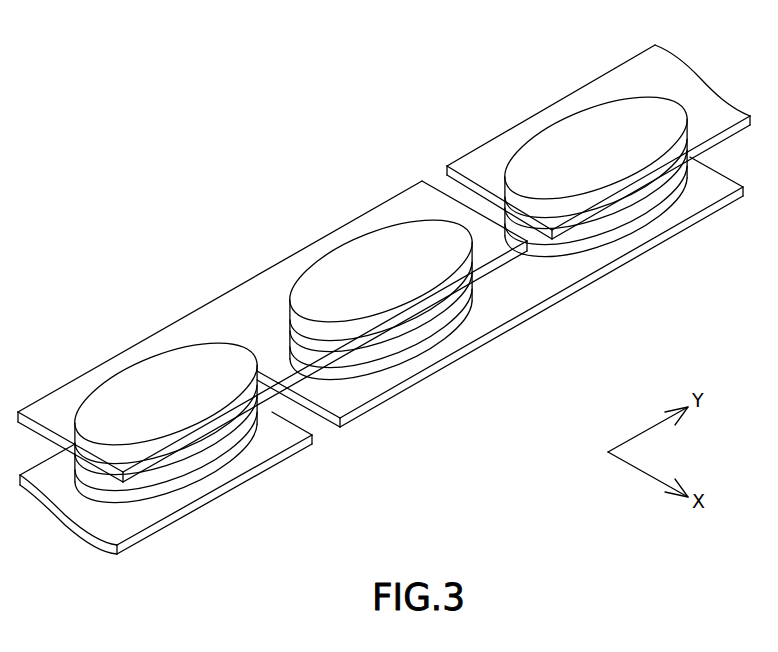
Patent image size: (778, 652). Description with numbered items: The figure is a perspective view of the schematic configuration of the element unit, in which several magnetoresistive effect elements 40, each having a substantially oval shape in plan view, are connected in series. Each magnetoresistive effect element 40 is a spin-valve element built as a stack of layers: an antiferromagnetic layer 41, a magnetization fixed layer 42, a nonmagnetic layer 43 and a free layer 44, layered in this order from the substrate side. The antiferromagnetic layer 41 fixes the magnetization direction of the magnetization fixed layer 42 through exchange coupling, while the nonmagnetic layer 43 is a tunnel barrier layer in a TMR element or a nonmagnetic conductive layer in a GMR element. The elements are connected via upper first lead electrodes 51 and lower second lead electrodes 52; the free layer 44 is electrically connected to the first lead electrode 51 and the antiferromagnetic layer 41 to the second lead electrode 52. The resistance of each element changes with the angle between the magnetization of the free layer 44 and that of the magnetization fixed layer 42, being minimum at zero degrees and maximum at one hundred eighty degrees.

The magnetoresistive effect element 40 is at (375, 289).
The antiferromagnetic layer 41 is at (455, 332).
The magnetization fixed layer 42 is at (427, 333).
The nonmagnetic layer 43 is at (402, 332).
The free layer 44 is at (340, 333).
The first lead electrode 51 is at (262, 284).
The second lead electrode 52 is at (203, 505).